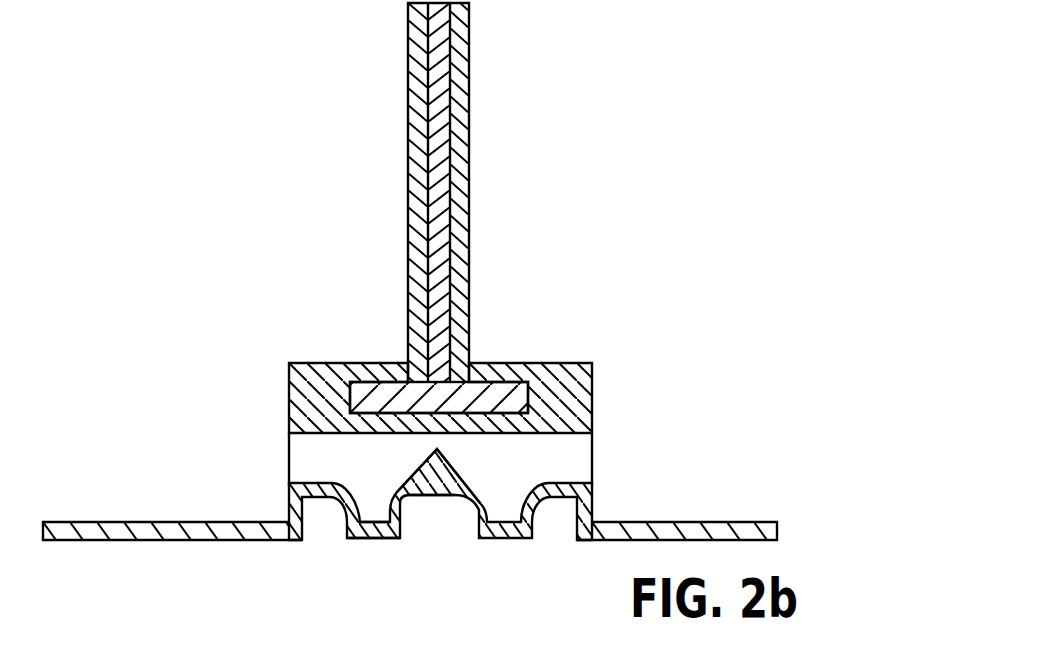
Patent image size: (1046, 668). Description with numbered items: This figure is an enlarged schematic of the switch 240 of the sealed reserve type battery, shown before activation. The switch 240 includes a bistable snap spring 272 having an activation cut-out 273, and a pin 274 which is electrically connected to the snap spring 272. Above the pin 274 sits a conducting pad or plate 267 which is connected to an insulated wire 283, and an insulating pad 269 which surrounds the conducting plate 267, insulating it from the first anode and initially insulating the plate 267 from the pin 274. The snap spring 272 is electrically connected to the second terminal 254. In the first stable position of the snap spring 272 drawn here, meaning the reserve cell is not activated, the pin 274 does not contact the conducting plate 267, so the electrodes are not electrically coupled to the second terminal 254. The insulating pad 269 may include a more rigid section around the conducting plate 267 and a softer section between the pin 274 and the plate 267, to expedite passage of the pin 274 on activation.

The switch 240 is at (410, 299).
The second terminal 254 is at (410, 558).
The conducting pad or plate 267 is at (522, 363).
The insulating pad 269 is at (592, 364).
The bistable snap spring 272 is at (377, 538).
The activation cut-out 273 is at (448, 502).
The pin 274 is at (457, 463).
The insulated wire 283 is at (469, 207).